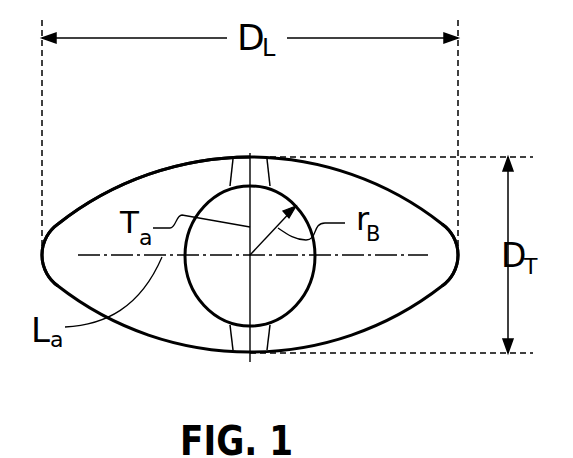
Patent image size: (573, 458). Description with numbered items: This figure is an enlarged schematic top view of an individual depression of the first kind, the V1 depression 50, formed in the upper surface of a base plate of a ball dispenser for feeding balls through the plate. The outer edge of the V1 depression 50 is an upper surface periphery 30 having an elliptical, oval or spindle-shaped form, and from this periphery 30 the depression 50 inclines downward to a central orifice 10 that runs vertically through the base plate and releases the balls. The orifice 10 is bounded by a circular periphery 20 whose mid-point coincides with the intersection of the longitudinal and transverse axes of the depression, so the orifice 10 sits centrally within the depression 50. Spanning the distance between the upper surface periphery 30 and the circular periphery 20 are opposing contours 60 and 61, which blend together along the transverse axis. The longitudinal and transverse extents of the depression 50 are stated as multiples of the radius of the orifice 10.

The orifice 10 is at (221, 285).
The circular periphery 20 is at (192, 291).
The upper surface periphery 30 is at (183, 172).
The depression of a first kind (V1 depression) 50 is at (157, 200).
The opposing contour 60 is at (233, 173).
The opposing contour 61 is at (272, 172).